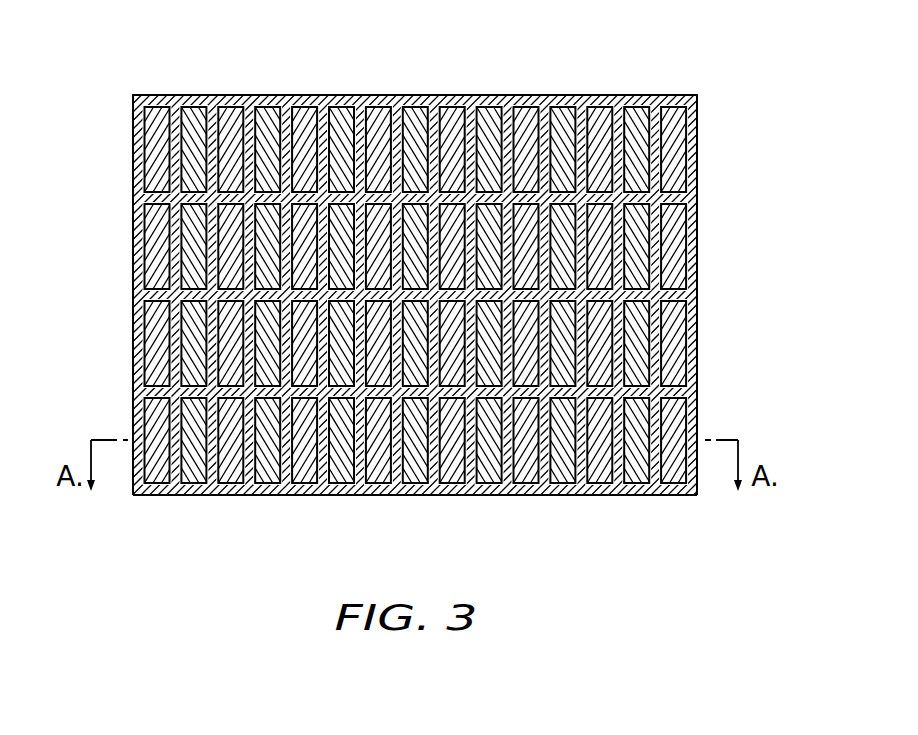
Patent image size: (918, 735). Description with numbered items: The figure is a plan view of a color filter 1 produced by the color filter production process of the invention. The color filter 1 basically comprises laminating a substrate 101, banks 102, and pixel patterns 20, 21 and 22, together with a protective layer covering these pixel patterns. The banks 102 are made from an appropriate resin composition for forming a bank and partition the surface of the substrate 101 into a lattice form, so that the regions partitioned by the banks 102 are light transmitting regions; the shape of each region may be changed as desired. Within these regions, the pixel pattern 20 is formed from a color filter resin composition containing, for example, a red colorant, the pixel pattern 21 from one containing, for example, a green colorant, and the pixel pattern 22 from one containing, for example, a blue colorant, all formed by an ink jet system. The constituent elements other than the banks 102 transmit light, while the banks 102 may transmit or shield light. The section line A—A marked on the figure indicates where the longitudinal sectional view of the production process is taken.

The color filter 1 is at (523, 95).
The pixel pattern 20 is at (158, 108).
The pixel pattern 21 is at (202, 108).
The pixel pattern 22 is at (233, 108).
The substrate 101 is at (697, 196).
The banks 102 is at (443, 495).